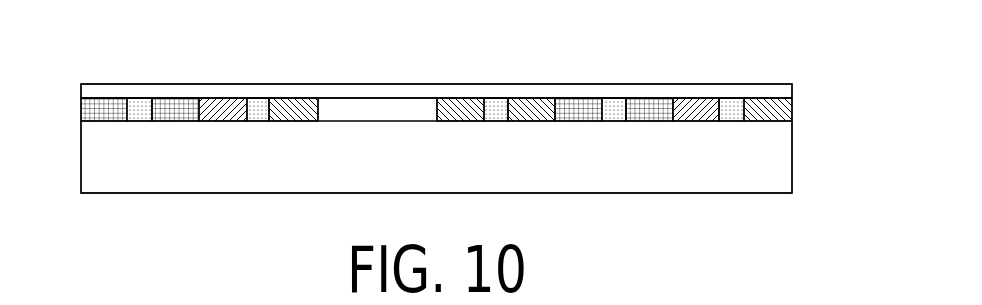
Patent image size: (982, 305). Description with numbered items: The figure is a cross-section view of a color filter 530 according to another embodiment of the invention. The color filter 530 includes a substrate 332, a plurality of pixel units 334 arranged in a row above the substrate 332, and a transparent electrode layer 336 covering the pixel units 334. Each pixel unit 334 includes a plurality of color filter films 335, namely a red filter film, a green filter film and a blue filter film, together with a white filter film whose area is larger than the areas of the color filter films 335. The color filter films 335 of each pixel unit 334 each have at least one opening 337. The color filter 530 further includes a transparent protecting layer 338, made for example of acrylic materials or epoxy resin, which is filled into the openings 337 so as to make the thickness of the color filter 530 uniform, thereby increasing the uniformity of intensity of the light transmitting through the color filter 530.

The substrate 332 is at (786, 165).
The pixel unit 334 is at (77, 100).
The color filter film 335 is at (103, 98).
The transparent electrode layer 336 is at (786, 91).
The opening 337 is at (160, 114).
The transparent protecting layer 338 is at (145, 98).
The color filter 530 is at (853, 230).